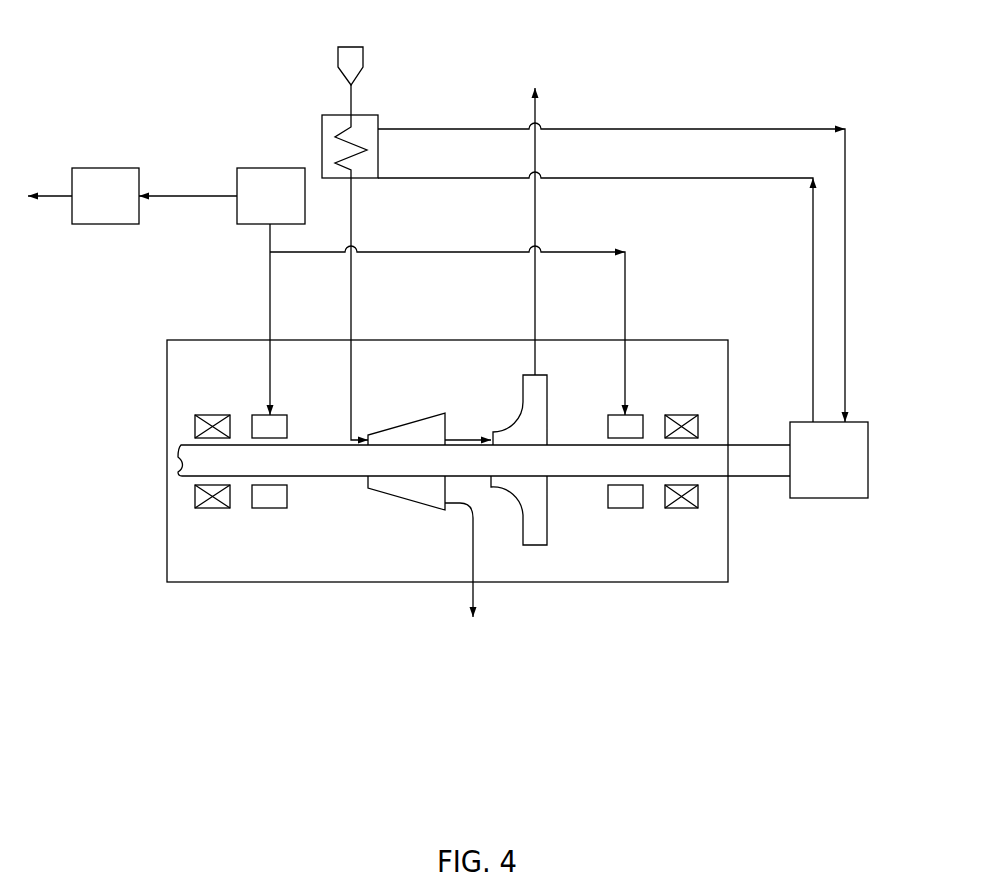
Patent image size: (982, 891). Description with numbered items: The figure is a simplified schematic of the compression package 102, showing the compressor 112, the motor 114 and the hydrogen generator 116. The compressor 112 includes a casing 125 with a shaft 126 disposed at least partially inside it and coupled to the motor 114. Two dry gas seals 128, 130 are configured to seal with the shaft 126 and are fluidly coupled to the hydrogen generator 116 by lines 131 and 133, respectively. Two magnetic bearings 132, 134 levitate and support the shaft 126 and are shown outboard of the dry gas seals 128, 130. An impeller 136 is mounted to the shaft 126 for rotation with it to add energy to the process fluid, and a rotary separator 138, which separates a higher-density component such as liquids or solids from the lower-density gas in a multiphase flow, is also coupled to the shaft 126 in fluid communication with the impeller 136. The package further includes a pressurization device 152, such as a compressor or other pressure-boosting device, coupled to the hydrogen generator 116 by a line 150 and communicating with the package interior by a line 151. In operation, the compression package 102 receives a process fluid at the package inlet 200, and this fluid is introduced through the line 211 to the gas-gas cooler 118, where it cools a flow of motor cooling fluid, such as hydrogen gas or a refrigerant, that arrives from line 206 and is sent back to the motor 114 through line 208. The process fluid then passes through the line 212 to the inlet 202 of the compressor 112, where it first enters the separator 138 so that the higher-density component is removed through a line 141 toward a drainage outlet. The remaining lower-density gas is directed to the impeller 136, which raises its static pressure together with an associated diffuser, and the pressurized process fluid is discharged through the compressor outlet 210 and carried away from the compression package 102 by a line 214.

The compression package 102 is at (170, 100).
The compressor 112 is at (447, 432).
The motor 114 is at (813, 475).
The hydrogen generator 116 is at (255, 208).
The gas-gas cooler 118 is at (378, 125).
The casing 125 is at (415, 340).
The shaft 126 is at (750, 470).
The dry gas seal 128 is at (287, 413).
The dry gas seal 130 is at (643, 413).
The line 131 is at (270, 282).
The magnetic bearing 132 is at (205, 510).
The line 133 is at (625, 300).
The magnetic bearing 134 is at (675, 510).
The impeller 136 is at (547, 392).
The rotary separator 138 is at (410, 421).
The line 141 is at (476, 593).
The line 150 is at (165, 194).
The line 151 is at (55, 198).
The pressurization device 152 is at (89, 208).
The package inlet 200 is at (363, 62).
The inlet 202 is at (349, 338).
The line 206 is at (813, 258).
The line 208 is at (845, 245).
The compressor outlet 210 is at (534, 340).
The line 211 is at (351, 110).
The line 212 is at (351, 215).
The line 214 is at (535, 215).